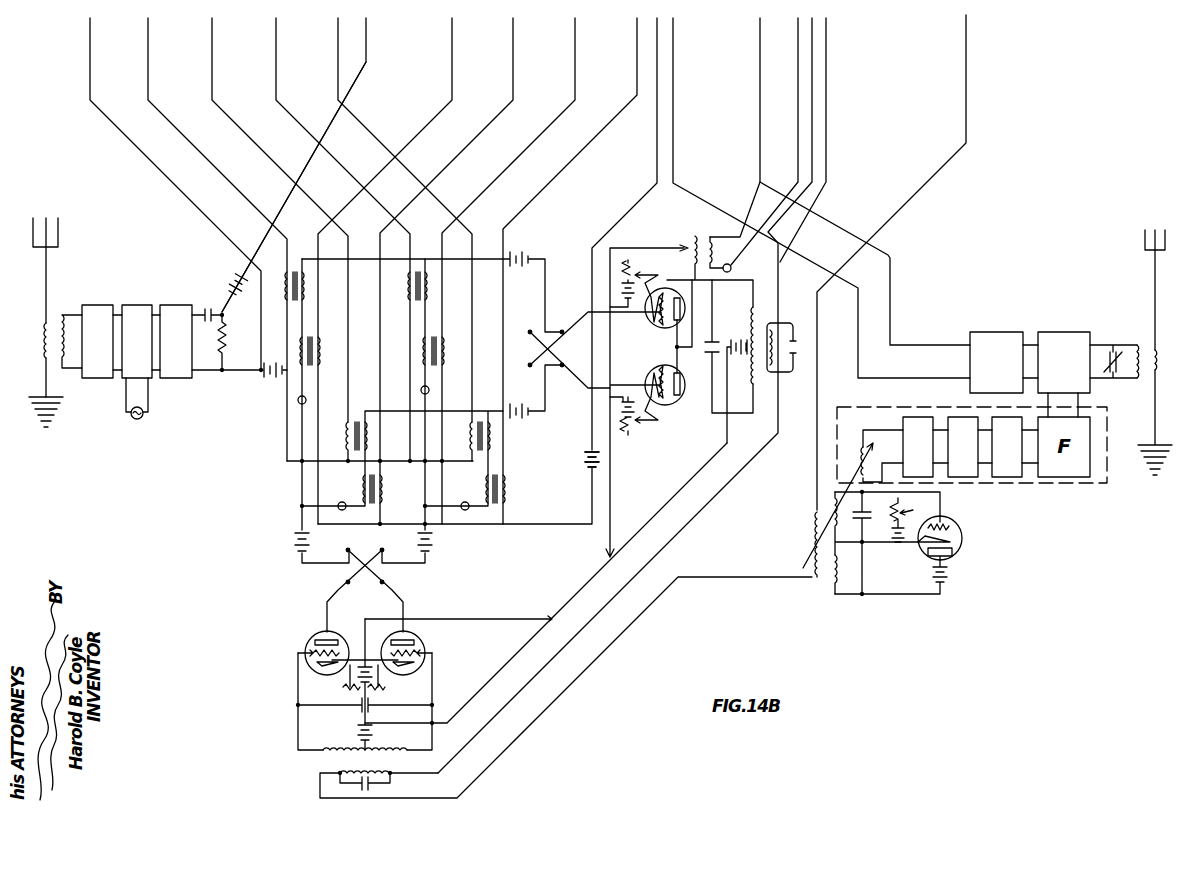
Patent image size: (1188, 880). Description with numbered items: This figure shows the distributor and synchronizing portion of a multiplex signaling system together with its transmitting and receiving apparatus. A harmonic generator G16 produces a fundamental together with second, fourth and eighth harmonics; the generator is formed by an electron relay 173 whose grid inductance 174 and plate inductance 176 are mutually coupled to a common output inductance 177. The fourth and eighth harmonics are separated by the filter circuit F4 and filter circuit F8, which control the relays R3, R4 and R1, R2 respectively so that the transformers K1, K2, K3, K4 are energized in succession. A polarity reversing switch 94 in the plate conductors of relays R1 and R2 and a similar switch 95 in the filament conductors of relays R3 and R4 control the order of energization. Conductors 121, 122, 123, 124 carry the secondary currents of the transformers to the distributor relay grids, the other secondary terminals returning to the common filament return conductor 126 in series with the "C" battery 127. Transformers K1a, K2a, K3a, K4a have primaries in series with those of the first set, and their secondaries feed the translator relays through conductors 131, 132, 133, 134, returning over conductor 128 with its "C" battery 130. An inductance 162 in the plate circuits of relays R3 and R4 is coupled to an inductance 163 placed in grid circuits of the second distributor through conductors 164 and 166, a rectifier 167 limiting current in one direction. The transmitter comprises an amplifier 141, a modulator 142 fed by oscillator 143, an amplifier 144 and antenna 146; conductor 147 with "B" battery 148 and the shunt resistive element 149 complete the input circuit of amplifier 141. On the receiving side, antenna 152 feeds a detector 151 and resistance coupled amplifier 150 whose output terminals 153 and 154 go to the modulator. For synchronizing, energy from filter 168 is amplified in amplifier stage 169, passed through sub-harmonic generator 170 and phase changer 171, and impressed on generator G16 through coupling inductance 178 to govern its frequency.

The conductor 121 is at (212, 80).
The conductor 122 is at (338, 80).
The conductor 123 is at (148, 80).
The conductor 124 is at (276, 80).
The common filament return conductor 126 is at (168, 180).
The "C" battery 127 is at (270, 388).
The common filament return conductor 128 is at (646, 193).
The "C" battery 130 is at (584, 458).
The conductor 131 is at (513, 80).
The conductor 132 is at (637, 43).
The conductor 133 is at (452, 80).
The conductor 134 is at (575, 80).
The amplifier 141 is at (175, 305).
The modulator 142 is at (135, 305).
The oscillator 143 is at (141, 419).
The amplifier 144 is at (95, 305).
The radio antenna 146 is at (46, 257).
The conductor 147 is at (328, 128).
The "B" battery 148 is at (229, 282).
The resistive element 149 is at (226, 343).
The resistance coupled amplifier 150 is at (1004, 333).
The detector 151 is at (1068, 326).
The radio antenna 152 is at (1155, 277).
The output terminal 153 is at (673, 77).
The output terminal 154 is at (760, 77).
The inductance 162 is at (699, 240).
The inductance 163 is at (716, 250).
The conductor 164 is at (798, 77).
The conductor 166 is at (812, 77).
The rectifier or valve 167 is at (733, 270).
The filter 168 is at (1097, 470).
The amplifier stage 169 is at (1012, 478).
The sub-harmonic generator 170 is at (963, 478).
The phase changer 171 is at (914, 416).
The electron relay 173 is at (962, 553).
The grid inductance 174 is at (815, 505).
The plate inductance 176 is at (827, 585).
The common output inductance 177 is at (812, 547).
The coupling inductance 178 is at (838, 500).
The transformer K1 is at (347, 450).
The transformer K1a is at (361, 490).
The transformer K2 is at (494, 437).
The transformer K2a is at (484, 490).
The transformer K3 is at (307, 288).
The transformer K3a is at (323, 352).
The transformer K4 is at (431, 288).
The transformer K4a is at (446, 358).
The relay R1 is at (305, 643).
The relay R2 is at (427, 643).
The relay R3 is at (680, 400).
The relay R4 is at (668, 330).
The filter circuit F4 is at (758, 313).
The filter circuit F8 is at (340, 767).
The harmonic generator G16 is at (882, 594).
The polarity reversing switch 94 is at (345, 578).
The polarity reversing switch 95 is at (549, 331).